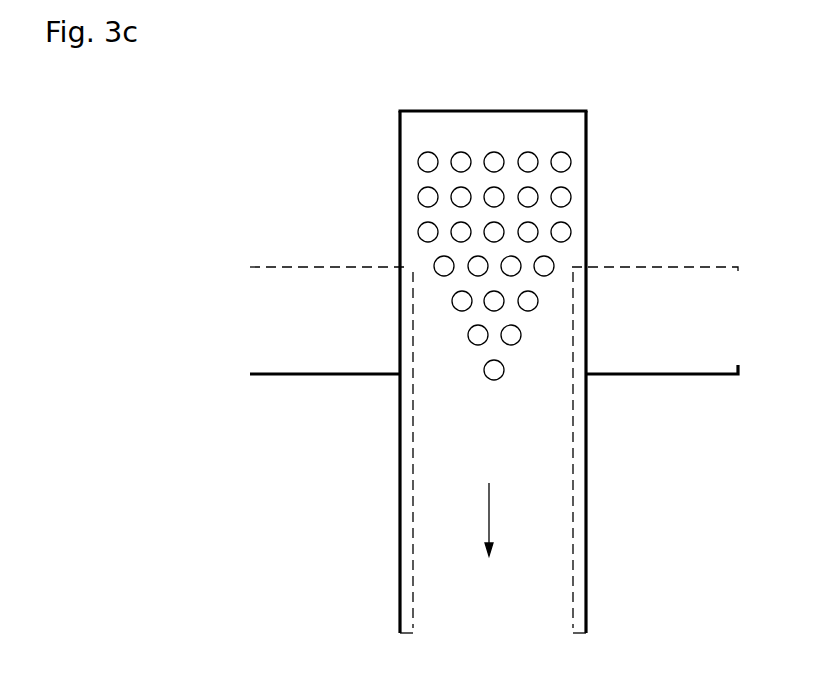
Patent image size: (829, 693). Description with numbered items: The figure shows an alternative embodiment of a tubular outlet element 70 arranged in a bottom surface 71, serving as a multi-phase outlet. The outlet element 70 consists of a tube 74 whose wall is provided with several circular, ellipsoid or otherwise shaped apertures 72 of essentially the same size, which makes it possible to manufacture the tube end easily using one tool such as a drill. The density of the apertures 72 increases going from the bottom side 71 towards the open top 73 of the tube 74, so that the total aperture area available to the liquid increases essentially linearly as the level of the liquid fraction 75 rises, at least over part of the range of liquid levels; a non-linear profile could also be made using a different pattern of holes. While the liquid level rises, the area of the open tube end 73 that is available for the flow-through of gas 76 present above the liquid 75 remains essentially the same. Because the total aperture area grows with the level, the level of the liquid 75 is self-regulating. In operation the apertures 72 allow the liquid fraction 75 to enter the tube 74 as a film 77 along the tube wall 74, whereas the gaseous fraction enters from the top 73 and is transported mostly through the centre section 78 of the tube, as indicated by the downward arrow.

The tubular outlet element 70 is at (320, 107).
The bottom surface 71 is at (248, 373).
The apertures 72 is at (487, 188).
The open top 73 is at (540, 110).
The tube 74 is at (398, 527).
The liquid fraction 75 is at (283, 263).
The gas 76 is at (638, 228).
The film 77 is at (580, 608).
The centre section 78 is at (508, 562).